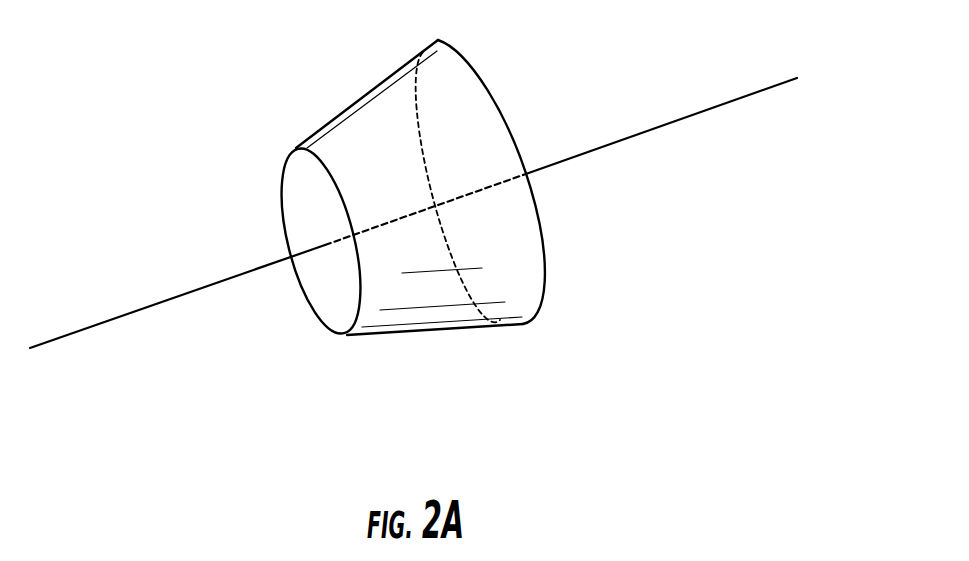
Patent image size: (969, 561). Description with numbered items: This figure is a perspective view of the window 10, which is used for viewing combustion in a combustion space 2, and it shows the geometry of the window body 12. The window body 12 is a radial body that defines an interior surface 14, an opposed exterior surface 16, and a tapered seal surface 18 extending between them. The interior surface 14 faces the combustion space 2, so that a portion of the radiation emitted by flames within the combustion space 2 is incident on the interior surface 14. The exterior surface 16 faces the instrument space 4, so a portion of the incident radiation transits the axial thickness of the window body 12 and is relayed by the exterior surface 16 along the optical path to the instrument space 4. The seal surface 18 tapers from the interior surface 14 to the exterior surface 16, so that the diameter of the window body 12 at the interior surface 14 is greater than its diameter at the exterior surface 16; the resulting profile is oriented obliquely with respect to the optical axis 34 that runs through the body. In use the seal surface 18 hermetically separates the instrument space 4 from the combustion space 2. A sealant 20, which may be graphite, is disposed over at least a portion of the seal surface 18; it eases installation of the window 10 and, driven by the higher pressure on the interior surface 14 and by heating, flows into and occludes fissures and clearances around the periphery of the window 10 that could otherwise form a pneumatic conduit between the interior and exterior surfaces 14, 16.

The combustion space 2 is at (753, 232).
The instrument space 4 is at (143, 381).
The window 10 is at (320, 408).
The window body 12 is at (470, 247).
The interior surface 14 is at (556, 227).
The exterior surface 16 is at (333, 287).
The seal surface 18 is at (342, 127).
The sealant 20 is at (396, 342).
The optical axis 34 is at (645, 130).